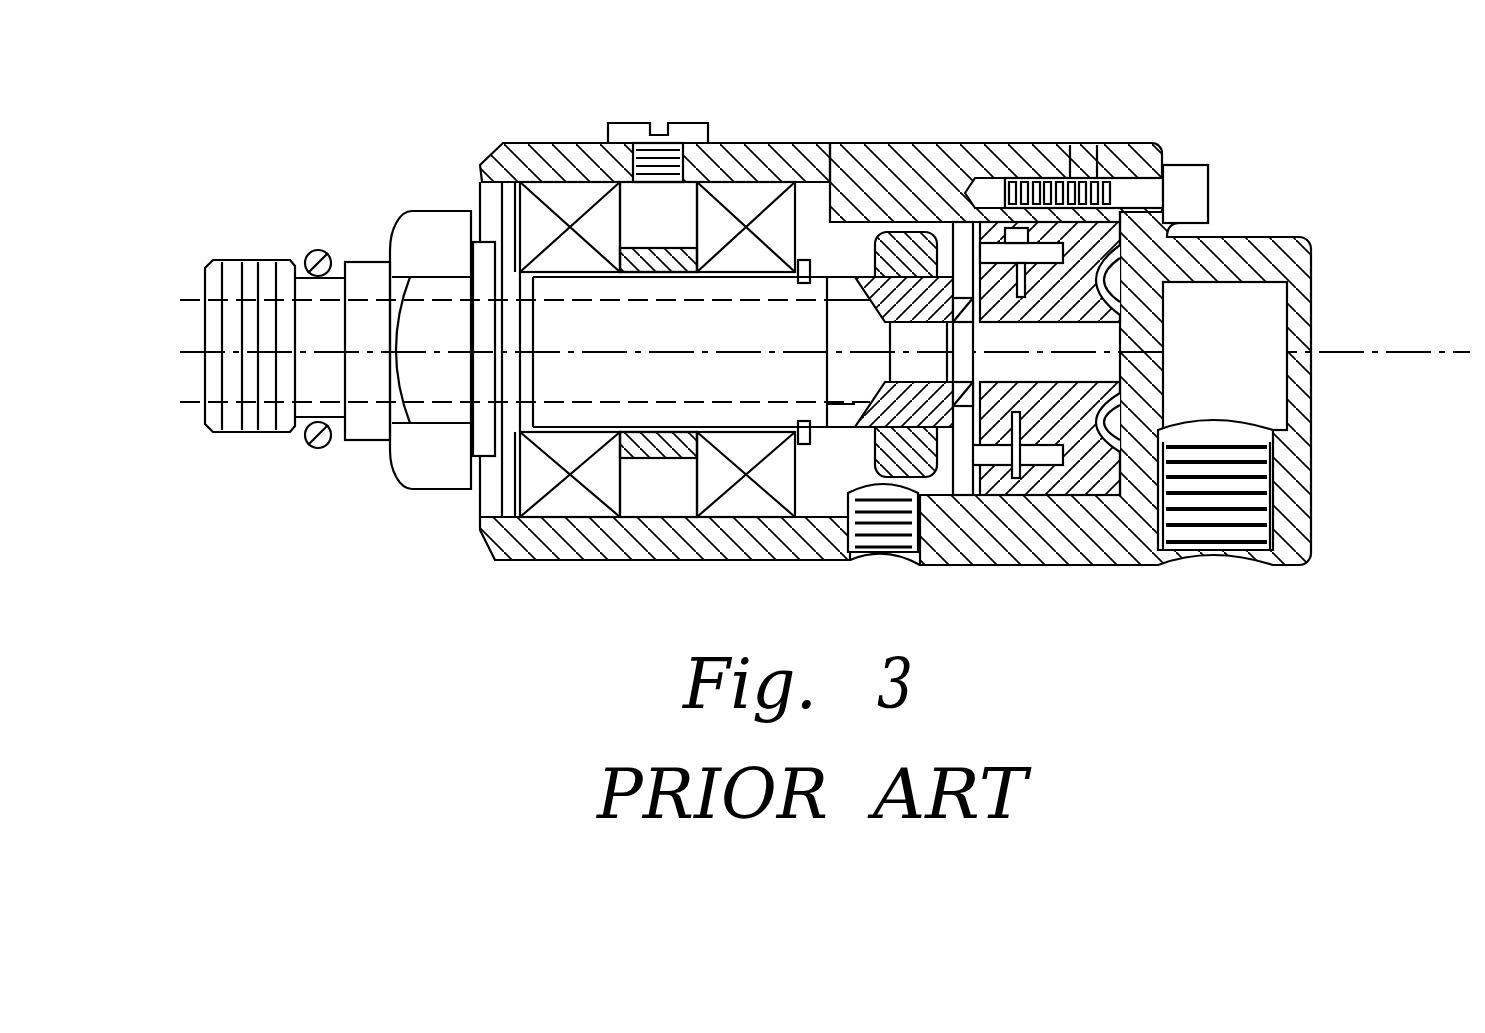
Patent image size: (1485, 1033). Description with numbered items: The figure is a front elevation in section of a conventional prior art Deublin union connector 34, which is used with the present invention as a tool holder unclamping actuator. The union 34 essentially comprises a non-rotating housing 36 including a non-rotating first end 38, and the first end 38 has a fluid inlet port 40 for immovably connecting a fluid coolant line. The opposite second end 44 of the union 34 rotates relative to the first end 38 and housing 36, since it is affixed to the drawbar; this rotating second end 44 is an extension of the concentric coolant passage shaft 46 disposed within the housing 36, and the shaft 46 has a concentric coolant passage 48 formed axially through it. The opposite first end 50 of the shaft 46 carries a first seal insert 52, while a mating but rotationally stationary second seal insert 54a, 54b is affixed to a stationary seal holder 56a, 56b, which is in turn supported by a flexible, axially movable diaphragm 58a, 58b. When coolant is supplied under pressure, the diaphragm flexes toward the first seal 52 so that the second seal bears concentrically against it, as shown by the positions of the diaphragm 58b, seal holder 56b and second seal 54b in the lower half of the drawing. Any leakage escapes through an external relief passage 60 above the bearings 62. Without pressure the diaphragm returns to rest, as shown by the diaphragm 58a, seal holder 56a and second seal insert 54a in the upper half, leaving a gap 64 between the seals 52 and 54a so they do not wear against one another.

The union connector 34 is at (452, 620).
The non-rotating housing 36 is at (760, 145).
The non-rotating first end 38 is at (1312, 240).
The fluid inlet port 40 is at (1217, 556).
The second end 44 is at (275, 258).
The concentric coolant passage shaft 46 is at (593, 270).
The concentric coolant passage 48 is at (448, 290).
The first end 50 is at (943, 240).
The first seal insert 52 is at (932, 371).
The second seal insert 54a is at (1000, 338).
The second seal insert 54b is at (993, 382).
The seal holder 56a is at (1000, 240).
The seal holder 56b is at (992, 475).
The diaphragm 58a is at (1108, 290).
The diaphragm 58b is at (1100, 445).
The external relief passage 60 is at (881, 556).
The bearings 62 is at (717, 508).
The gap 64 is at (968, 275).